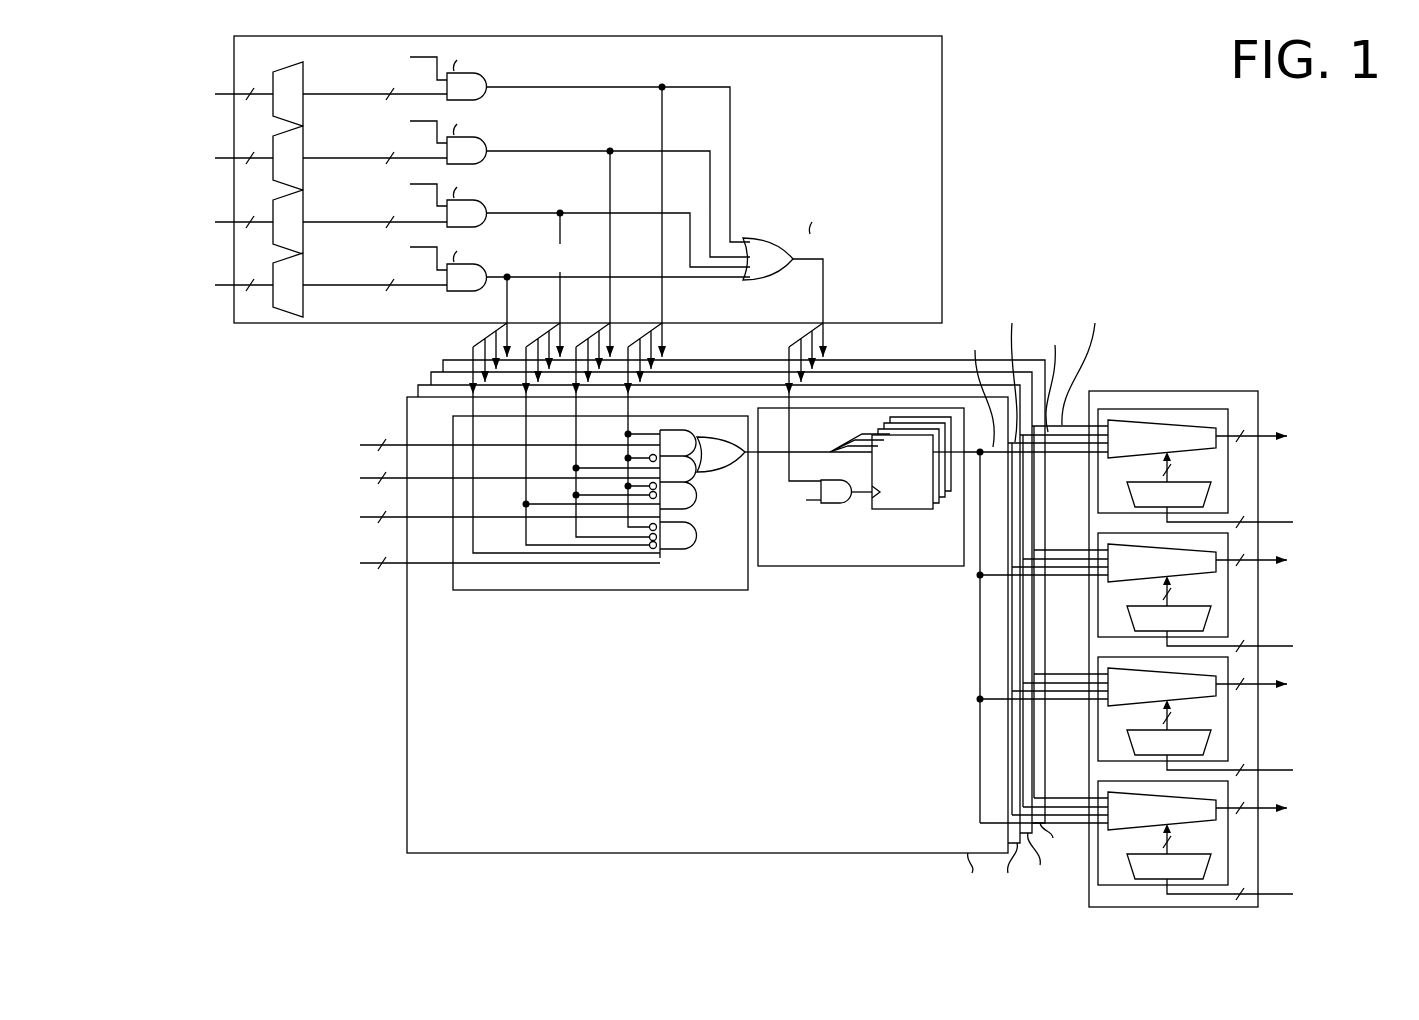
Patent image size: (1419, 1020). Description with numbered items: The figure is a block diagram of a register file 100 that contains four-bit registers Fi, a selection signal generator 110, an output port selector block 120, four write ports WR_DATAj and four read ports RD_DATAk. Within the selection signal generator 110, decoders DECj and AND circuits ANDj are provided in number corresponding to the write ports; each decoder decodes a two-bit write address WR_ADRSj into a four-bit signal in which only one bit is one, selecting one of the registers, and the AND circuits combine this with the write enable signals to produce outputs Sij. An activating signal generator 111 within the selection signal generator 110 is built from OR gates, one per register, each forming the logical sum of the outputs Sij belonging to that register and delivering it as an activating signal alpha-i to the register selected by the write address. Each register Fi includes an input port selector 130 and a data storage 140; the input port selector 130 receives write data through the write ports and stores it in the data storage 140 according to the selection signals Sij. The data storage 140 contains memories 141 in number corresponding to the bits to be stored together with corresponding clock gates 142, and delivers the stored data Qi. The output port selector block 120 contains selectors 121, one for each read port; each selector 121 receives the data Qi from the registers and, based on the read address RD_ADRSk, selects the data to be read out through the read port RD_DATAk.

The register file 100 is at (1090, 118).
The selection signal generator 110 is at (943, 207).
The activating signal generator 111 is at (760, 234).
The output port selector block 120 is at (1194, 390).
The selector 121 is at (1284, 858).
The input port selector 130 is at (493, 591).
The data storage 140 is at (795, 566).
The memory 141 is at (898, 509).
The clock gate 142 is at (832, 503).